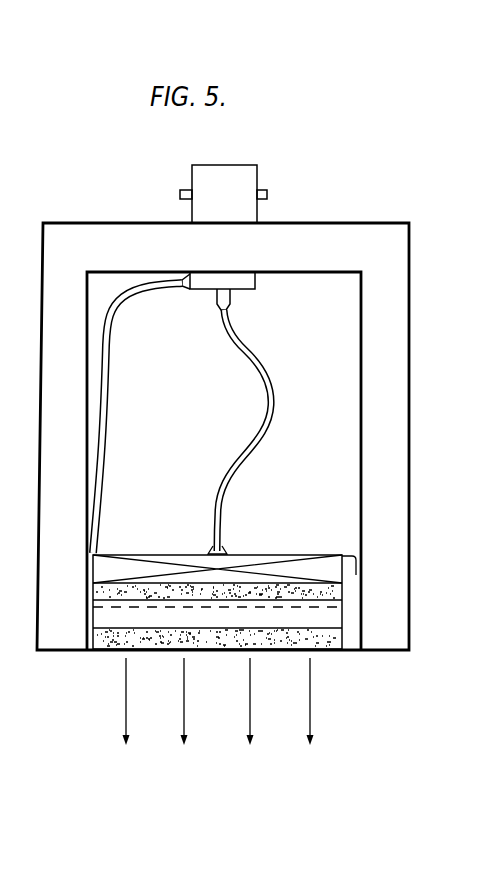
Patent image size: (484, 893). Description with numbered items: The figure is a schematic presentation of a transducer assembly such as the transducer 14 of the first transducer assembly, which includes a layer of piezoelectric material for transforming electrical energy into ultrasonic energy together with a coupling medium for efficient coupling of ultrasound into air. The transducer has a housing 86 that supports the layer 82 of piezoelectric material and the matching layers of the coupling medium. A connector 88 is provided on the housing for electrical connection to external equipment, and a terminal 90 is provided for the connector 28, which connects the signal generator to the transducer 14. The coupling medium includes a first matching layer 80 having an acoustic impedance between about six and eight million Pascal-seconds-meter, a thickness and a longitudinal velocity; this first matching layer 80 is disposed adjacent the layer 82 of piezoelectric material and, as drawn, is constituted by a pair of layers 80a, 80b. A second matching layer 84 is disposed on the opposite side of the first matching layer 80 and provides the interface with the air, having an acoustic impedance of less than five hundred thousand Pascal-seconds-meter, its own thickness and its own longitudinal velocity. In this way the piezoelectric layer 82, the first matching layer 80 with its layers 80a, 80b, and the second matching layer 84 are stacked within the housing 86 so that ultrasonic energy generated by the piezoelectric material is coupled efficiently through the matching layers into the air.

The transducer 14 is at (391, 313).
The housing 86 is at (390, 452).
The connector 88 is at (247, 185).
The terminal 90 is at (207, 277).
The connector 28 is at (256, 362).
The first matching layer 80 is at (351, 600).
The layer of piezoelectric material 82 is at (322, 568).
The layer of the first matching layer 80b is at (344, 591).
The layer of the first matching layer 80a is at (330, 618).
The second matching layer 84 is at (328, 643).